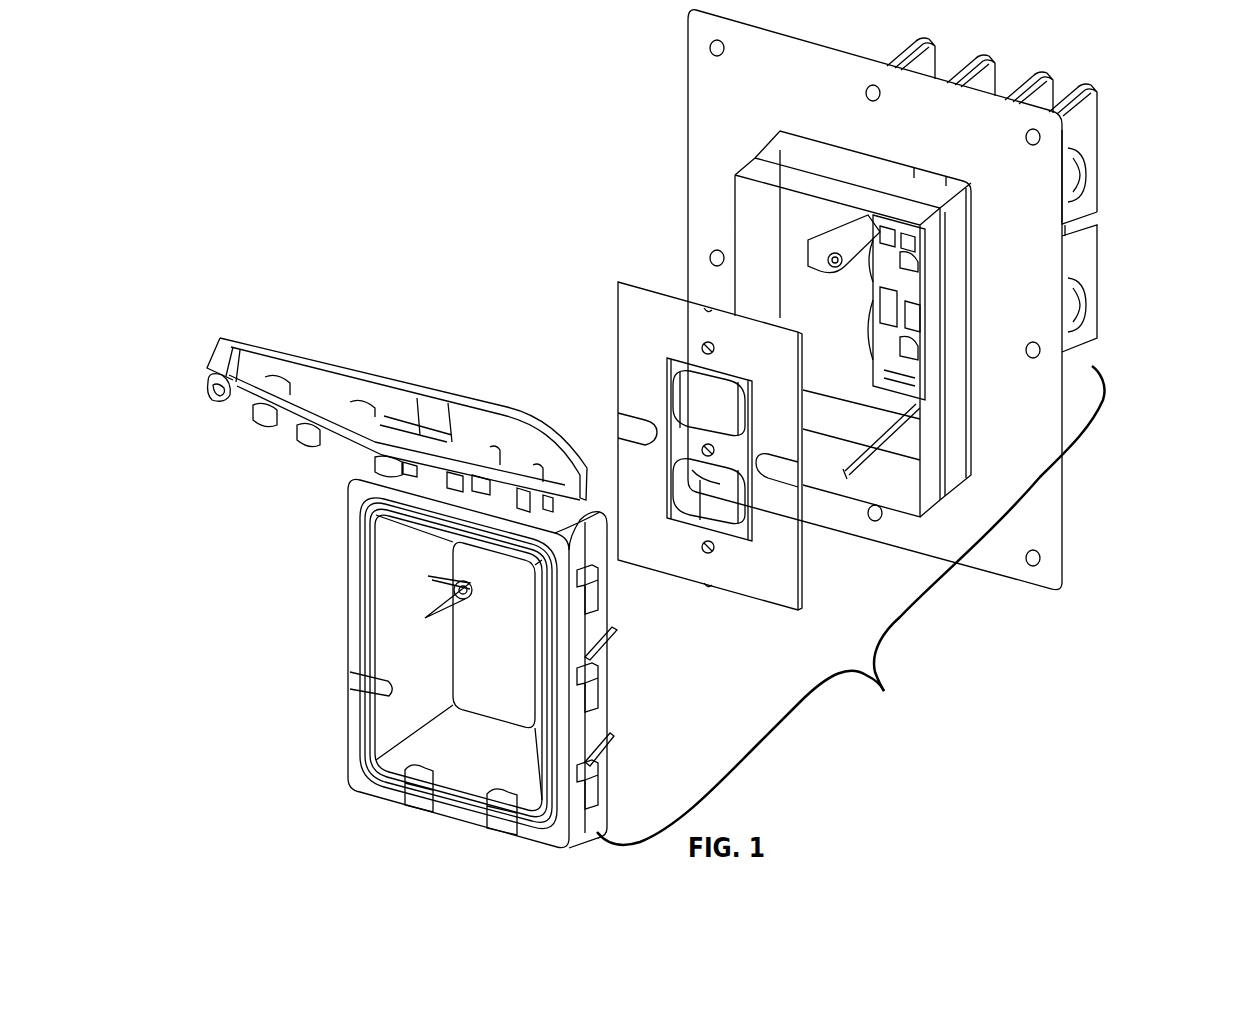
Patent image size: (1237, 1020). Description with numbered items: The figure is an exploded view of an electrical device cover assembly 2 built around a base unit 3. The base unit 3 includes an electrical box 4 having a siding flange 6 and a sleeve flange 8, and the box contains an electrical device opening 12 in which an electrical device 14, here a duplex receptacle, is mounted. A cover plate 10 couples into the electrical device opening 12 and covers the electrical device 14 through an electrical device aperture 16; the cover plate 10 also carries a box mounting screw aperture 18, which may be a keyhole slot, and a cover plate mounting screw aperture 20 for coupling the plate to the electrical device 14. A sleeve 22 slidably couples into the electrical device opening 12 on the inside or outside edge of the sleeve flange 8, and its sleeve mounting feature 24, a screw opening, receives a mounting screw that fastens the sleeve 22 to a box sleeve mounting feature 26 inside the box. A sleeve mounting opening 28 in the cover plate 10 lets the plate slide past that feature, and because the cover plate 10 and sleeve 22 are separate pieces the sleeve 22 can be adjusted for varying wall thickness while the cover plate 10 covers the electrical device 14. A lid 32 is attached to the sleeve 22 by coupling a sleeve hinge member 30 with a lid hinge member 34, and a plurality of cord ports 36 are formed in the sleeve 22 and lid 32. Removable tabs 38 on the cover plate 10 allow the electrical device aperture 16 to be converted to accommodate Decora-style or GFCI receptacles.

The electrical device cover assembly 2 is at (468, 177).
The base unit 3 is at (851, 605).
The electrical box 4 is at (1090, 187).
The siding flange 6 is at (1055, 505).
The sleeve flange 8 is at (960, 327).
The cover plate 10 is at (785, 578).
The electrical device opening 12 is at (852, 328).
The electrical device 14 is at (875, 300).
The electrical device aperture 16 is at (697, 505).
The box mounting screw aperture 18 is at (704, 345).
The cover plate mounting screw aperture 20 is at (705, 447).
The sleeve 22 is at (357, 505).
The sleeve mounting feature 24 is at (462, 591).
The box sleeve mounting feature 26 is at (833, 262).
The sleeve mounting opening 28 is at (645, 427).
The sleeve hinge member 30 is at (600, 778).
The lid 32 is at (343, 378).
The lid hinge member 34 is at (253, 413).
The cord port 36 is at (420, 782).
The removable tab 38 is at (733, 452).